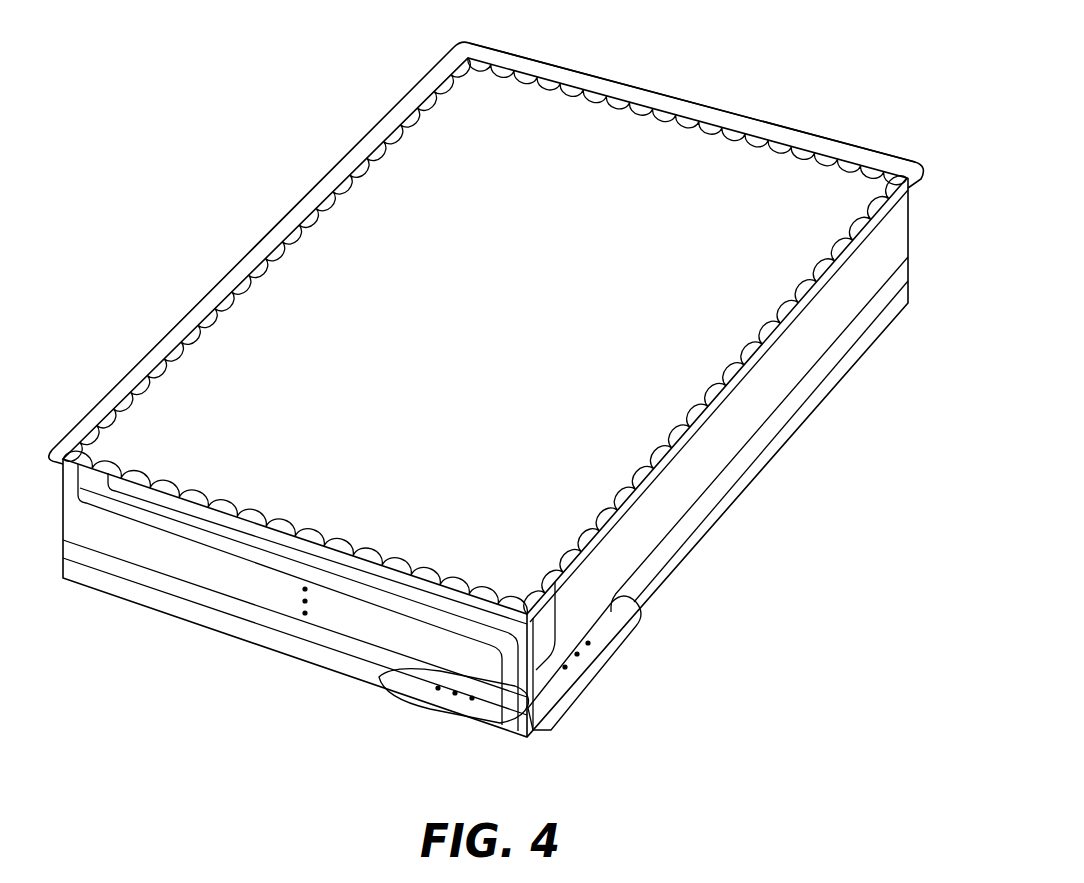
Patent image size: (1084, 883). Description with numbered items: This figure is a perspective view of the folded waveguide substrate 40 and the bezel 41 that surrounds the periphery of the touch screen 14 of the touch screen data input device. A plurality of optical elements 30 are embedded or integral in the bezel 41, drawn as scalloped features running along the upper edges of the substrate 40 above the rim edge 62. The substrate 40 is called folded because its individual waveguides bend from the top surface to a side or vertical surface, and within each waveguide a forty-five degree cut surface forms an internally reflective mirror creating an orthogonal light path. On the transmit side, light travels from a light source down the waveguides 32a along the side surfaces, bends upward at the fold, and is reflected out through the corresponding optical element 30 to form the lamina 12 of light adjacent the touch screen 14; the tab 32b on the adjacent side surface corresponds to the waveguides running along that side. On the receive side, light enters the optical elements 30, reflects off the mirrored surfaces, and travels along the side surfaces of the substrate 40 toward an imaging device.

The lamina 12 is at (518, 334).
The touch screen 14 is at (840, 192).
The optical elements 30 is at (672, 116).
The waveguides 32a is at (404, 700).
The strap tab 32b is at (616, 648).
The folded waveguide substrate 40 is at (88, 710).
The bezel 41 is at (293, 220).
The rim edge 62 is at (725, 105).